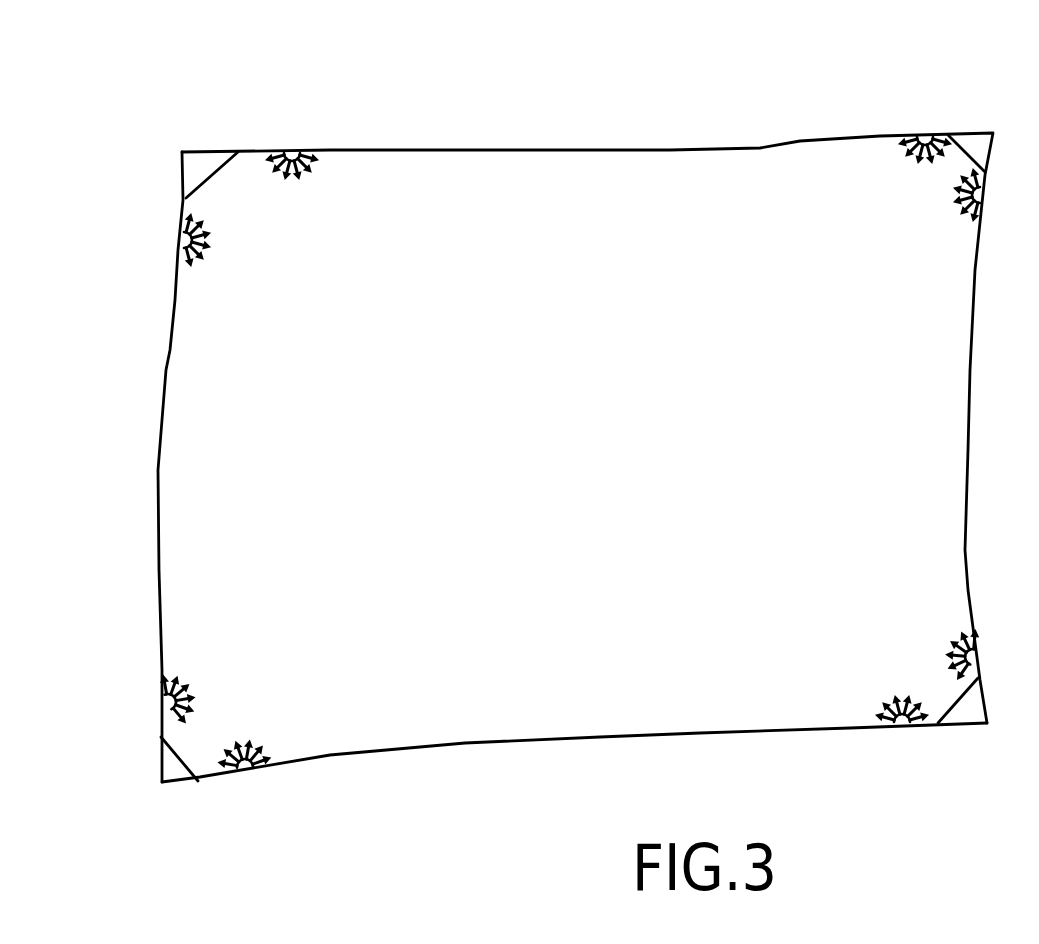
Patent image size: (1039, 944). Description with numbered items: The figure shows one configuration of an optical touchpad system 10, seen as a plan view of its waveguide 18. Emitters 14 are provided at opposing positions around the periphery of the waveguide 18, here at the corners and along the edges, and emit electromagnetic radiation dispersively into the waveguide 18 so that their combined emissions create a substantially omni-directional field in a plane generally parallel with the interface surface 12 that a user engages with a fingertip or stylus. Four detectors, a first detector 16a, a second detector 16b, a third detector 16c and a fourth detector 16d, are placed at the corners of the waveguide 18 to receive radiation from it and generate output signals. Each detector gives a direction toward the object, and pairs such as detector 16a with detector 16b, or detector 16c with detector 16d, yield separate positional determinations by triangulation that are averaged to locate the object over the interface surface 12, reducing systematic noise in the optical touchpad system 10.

The optical touchpad system 10 is at (575, 422).
The interface surface 12 is at (575, 475).
The emitter 14 is at (292, 150).
The first detector 16a is at (214, 156).
The second detector 16b is at (994, 137).
The third detector 16c is at (982, 697).
The fourth detector 16d is at (191, 784).
The waveguide 18 is at (467, 747).